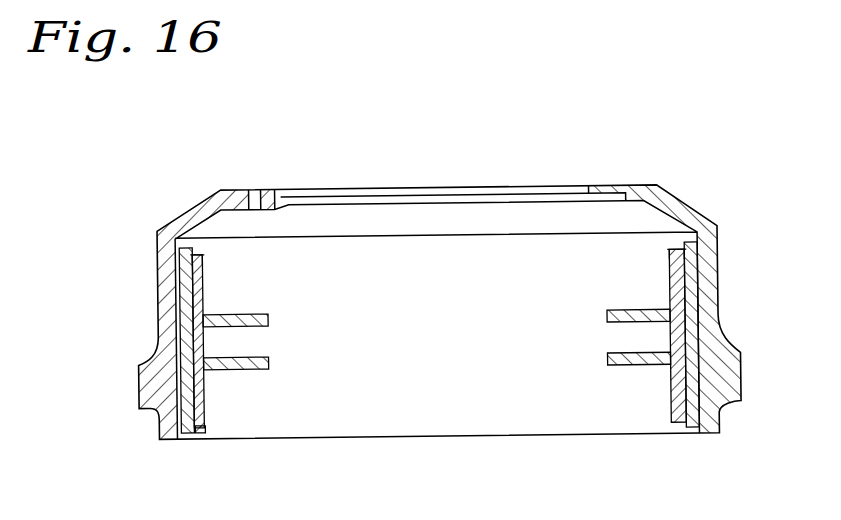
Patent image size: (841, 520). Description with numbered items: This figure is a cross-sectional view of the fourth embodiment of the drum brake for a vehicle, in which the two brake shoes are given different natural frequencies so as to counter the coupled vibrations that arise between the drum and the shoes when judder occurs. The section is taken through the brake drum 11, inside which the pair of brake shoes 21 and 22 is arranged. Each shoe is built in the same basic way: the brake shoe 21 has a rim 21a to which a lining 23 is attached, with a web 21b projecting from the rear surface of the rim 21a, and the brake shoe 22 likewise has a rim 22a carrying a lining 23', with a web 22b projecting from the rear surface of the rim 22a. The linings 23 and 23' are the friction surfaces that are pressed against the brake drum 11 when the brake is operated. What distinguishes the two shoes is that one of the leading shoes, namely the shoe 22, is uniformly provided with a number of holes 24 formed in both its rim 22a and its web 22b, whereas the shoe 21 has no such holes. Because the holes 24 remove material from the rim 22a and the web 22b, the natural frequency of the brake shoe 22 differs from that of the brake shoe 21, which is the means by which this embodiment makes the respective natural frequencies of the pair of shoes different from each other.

The brake drum 11 is at (678, 201).
The brake shoe 21 is at (665, 397).
The rim 21a is at (669, 255).
The web 21b is at (625, 313).
The brake shoe 22 is at (211, 334).
The rim 22a is at (209, 259).
The web 22b is at (268, 310).
The lining 23 is at (742, 334).
The lining 23' is at (134, 338).
The holes 24 is at (202, 411).